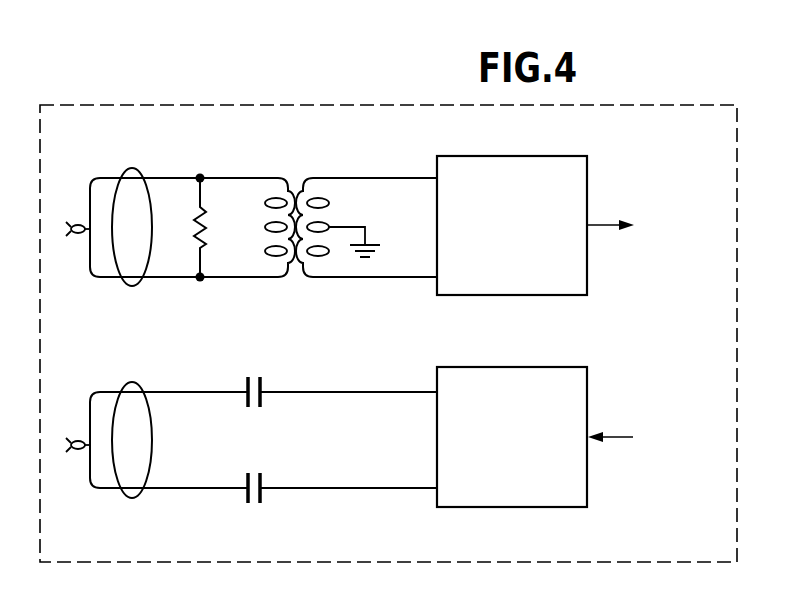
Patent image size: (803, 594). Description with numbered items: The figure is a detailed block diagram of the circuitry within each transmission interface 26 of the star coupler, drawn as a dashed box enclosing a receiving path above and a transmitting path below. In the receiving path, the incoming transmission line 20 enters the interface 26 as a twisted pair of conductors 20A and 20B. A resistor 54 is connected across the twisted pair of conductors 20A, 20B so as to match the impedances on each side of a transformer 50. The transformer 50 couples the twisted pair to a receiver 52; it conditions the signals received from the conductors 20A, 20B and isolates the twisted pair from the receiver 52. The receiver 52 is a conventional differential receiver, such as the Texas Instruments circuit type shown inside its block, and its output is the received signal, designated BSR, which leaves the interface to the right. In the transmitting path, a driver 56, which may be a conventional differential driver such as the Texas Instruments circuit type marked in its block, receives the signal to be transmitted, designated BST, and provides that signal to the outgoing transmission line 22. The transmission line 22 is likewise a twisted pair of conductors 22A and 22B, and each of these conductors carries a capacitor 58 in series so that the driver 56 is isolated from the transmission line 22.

The transmission line 20 is at (130, 170).
The conductor 20A is at (166, 178).
The conductor 20B is at (175, 278).
The transmission line 22 is at (130, 382).
The conductor 22A is at (176, 392).
The conductor 22B is at (208, 490).
The transmission interface 26 is at (345, 107).
The transformer 50 is at (297, 178).
The receiver 52 is at (587, 166).
The resistor 54 is at (201, 212).
The driver 56 is at (587, 367).
The capacitor 58 is at (247, 402).